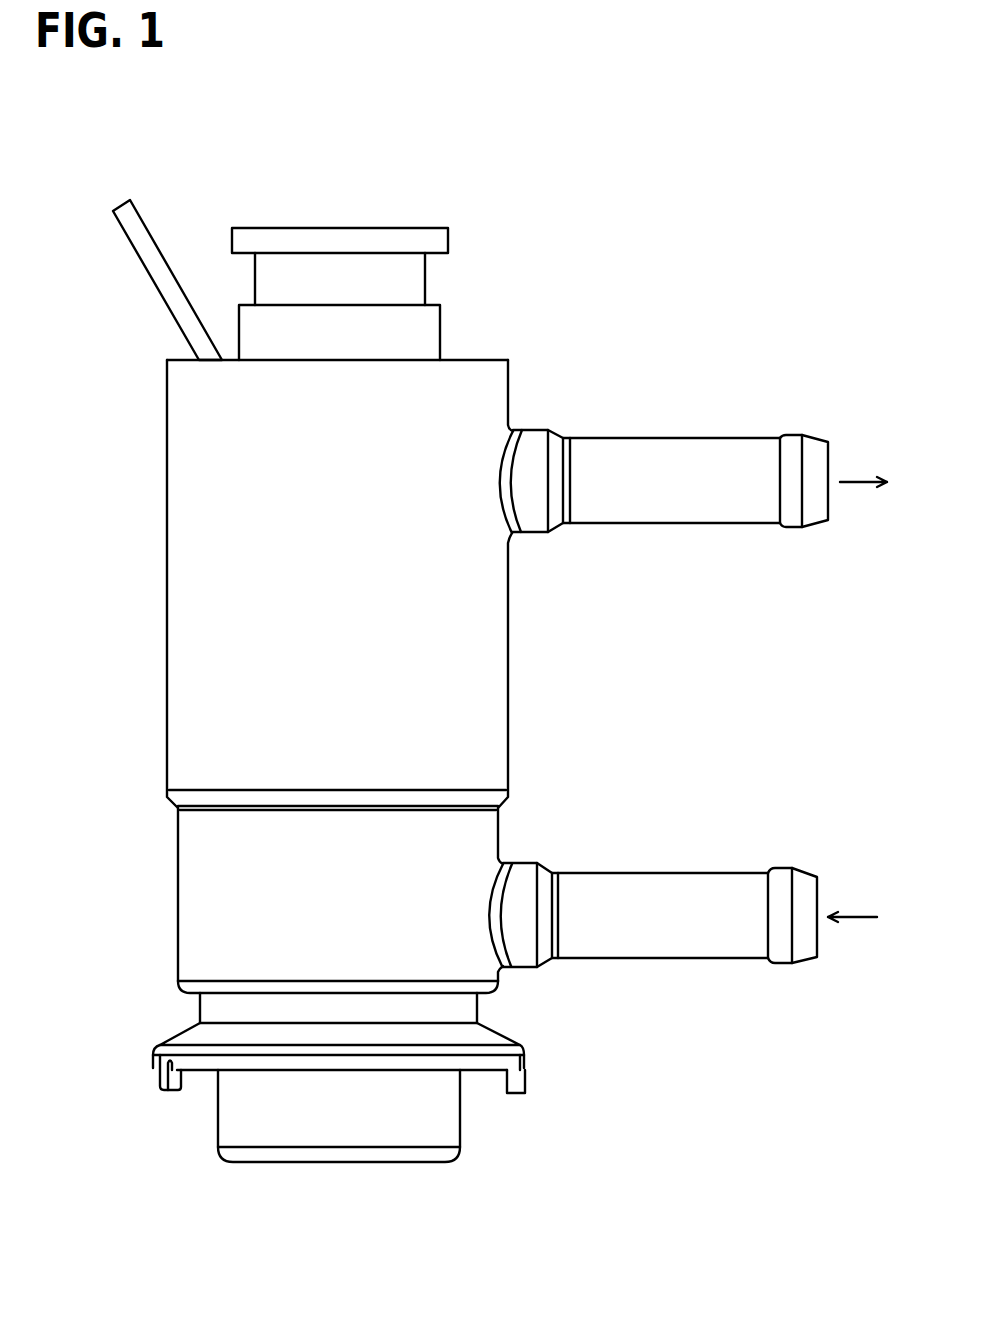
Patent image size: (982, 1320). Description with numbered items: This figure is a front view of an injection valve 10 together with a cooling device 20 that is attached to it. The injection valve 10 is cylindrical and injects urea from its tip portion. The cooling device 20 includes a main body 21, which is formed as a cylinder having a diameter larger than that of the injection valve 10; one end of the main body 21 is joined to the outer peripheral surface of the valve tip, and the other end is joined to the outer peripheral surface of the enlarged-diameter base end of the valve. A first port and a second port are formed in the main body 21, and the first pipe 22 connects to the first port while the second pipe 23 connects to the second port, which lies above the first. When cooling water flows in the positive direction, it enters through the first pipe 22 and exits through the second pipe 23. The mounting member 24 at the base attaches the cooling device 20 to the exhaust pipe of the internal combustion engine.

The injection valve 10 is at (440, 328).
The cooling device 20 is at (617, 383).
The main body 21 is at (508, 380).
The first pipe 22 is at (713, 873).
The second pipe 23 is at (715, 438).
The mounting member 24 is at (502, 1043).